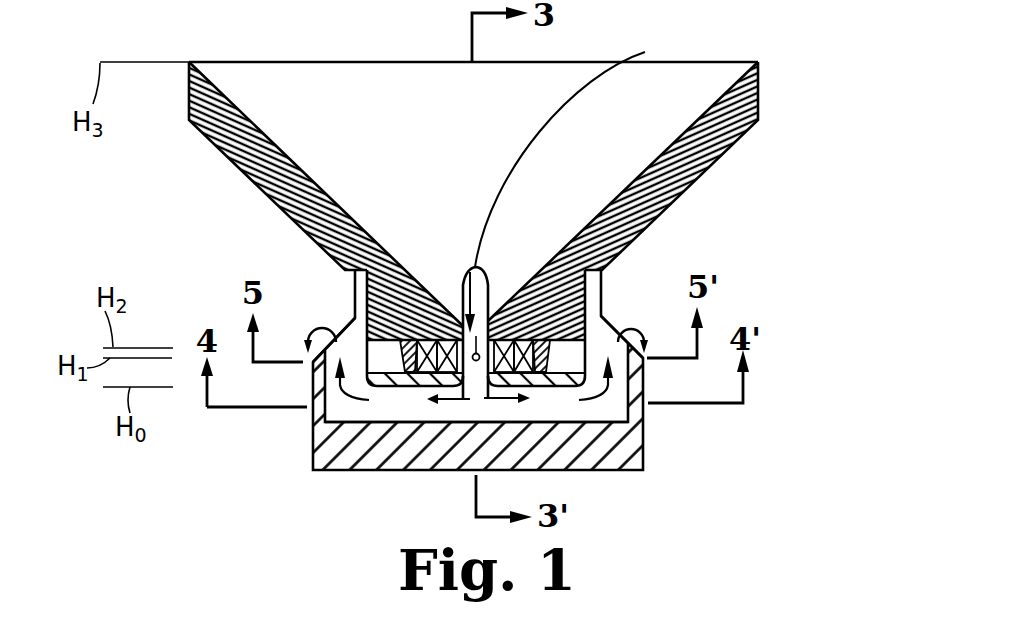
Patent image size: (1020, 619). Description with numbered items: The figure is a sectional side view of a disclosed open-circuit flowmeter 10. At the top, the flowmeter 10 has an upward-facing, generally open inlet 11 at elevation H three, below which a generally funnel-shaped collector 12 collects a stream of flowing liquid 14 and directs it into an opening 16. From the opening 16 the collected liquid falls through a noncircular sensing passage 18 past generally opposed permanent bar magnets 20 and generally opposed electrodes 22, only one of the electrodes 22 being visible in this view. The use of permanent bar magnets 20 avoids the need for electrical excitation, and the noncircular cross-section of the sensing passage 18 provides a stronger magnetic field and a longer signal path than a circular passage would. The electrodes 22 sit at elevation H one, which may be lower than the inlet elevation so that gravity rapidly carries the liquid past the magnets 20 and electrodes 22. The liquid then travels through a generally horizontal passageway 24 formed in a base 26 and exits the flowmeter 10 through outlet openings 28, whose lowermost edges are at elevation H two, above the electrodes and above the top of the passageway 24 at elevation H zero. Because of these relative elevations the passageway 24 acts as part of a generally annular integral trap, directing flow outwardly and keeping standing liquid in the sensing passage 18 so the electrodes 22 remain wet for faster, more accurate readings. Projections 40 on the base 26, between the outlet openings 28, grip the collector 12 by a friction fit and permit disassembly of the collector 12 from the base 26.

The flowmeter 10 is at (236, 36).
The inlet 11 is at (302, 61).
The collector 12 is at (758, 81).
The stream of flowing liquid 14 is at (588, 80).
The opening 16 is at (491, 284).
The sensing passage 18 is at (450, 315).
The permanent bar magnets 20 is at (432, 336).
The electrodes 22 is at (476, 361).
The passageway 24 is at (397, 421).
The base 26 is at (630, 451).
The outlet openings 28 is at (350, 332).
The projections 40 is at (615, 276).